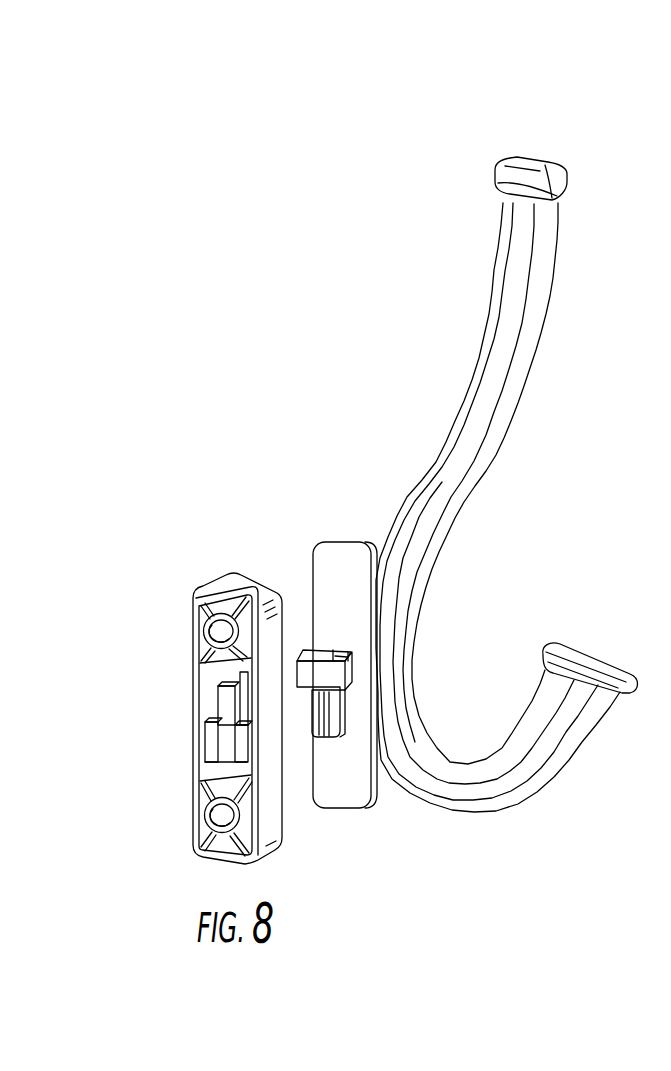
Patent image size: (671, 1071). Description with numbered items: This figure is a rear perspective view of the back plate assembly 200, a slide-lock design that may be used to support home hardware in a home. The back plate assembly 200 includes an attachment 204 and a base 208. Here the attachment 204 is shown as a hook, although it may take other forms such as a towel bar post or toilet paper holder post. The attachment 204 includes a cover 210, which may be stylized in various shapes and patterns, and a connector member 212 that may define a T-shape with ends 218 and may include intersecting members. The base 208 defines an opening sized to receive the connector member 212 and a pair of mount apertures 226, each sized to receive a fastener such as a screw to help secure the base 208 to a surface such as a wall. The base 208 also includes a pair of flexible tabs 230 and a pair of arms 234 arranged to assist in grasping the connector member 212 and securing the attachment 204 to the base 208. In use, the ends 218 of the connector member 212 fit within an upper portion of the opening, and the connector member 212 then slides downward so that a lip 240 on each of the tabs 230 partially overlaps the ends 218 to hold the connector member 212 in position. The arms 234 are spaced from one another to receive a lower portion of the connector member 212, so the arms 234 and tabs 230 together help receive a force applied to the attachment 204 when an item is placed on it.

The back plate assembly 200 is at (517, 120).
The attachment 204 is at (486, 302).
The base 208 is at (212, 574).
The cover 210 is at (340, 541).
The connector member 212 is at (306, 740).
The ends 218 is at (335, 648).
The mount apertures 226 is at (212, 627).
The flexible tabs 230 is at (222, 707).
The arms 234 is at (215, 767).
The lip 240 is at (213, 666).